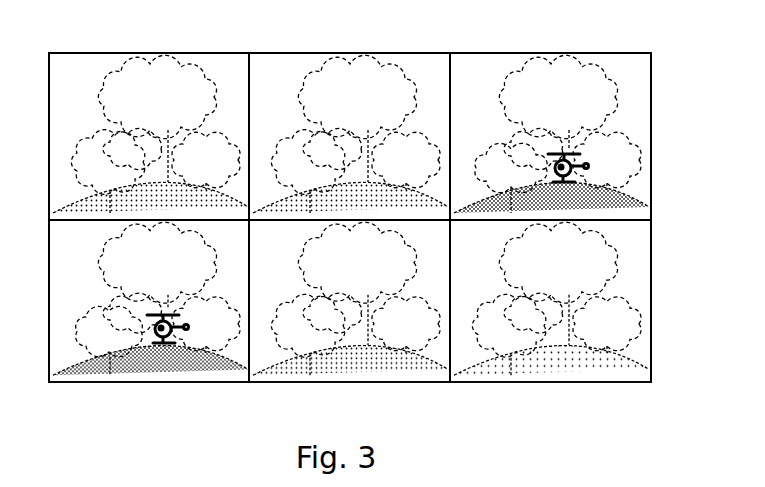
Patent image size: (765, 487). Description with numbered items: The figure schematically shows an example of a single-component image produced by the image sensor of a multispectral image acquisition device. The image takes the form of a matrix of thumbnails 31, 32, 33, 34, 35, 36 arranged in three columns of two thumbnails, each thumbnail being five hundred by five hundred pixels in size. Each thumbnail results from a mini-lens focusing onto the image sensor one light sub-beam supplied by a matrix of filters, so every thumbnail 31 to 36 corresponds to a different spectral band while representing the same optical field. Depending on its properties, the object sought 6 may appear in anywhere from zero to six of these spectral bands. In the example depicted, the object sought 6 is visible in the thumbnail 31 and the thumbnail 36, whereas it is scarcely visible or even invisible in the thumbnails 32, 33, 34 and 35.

The object sought 6 is at (556, 153).
The thumbnail 31 is at (133, 384).
The thumbnail 32 is at (355, 384).
The thumbnail 33 is at (551, 384).
The thumbnail 34 is at (151, 52).
The thumbnail 35 is at (341, 52).
The thumbnail 36 is at (541, 52).